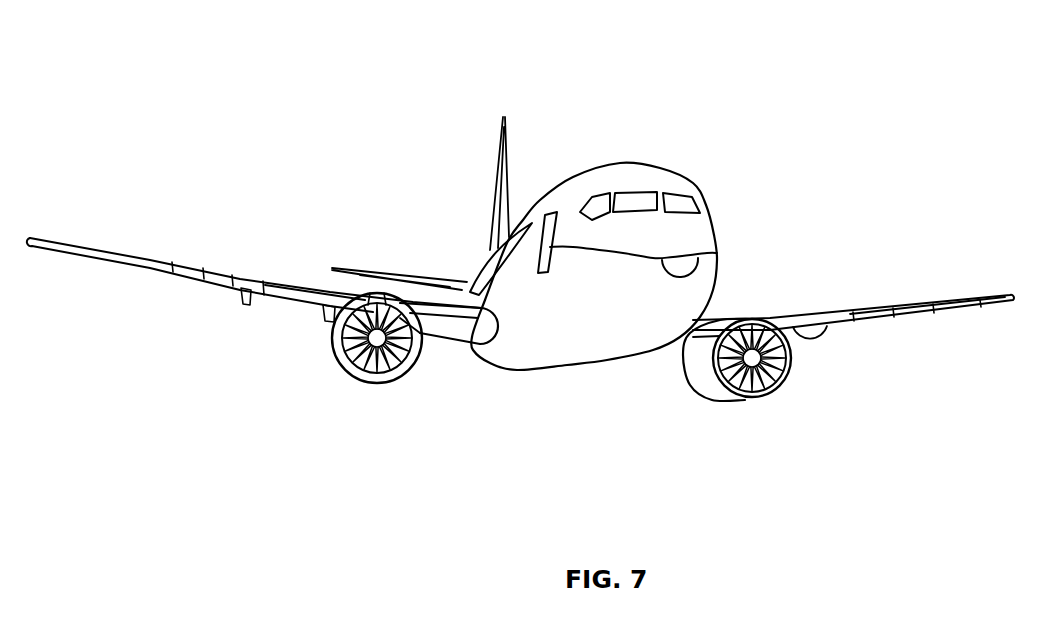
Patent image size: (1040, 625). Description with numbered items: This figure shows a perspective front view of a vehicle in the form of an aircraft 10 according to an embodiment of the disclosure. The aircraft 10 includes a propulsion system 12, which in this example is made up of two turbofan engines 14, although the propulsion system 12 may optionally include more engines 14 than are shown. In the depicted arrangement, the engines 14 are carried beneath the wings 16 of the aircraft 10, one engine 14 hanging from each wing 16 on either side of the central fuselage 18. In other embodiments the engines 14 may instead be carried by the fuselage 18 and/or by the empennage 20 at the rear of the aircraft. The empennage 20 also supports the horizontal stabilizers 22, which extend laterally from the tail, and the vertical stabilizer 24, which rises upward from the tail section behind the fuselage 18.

The aircraft 10 is at (278, 66).
The propulsion system 12 is at (828, 393).
The turbofan engines 14 is at (373, 383).
The wings 16 is at (160, 262).
The fuselage 18 is at (714, 226).
The empennage 20 is at (491, 247).
The horizontal stabilizers 22 is at (367, 270).
The vertical stabilizer 24 is at (498, 156).